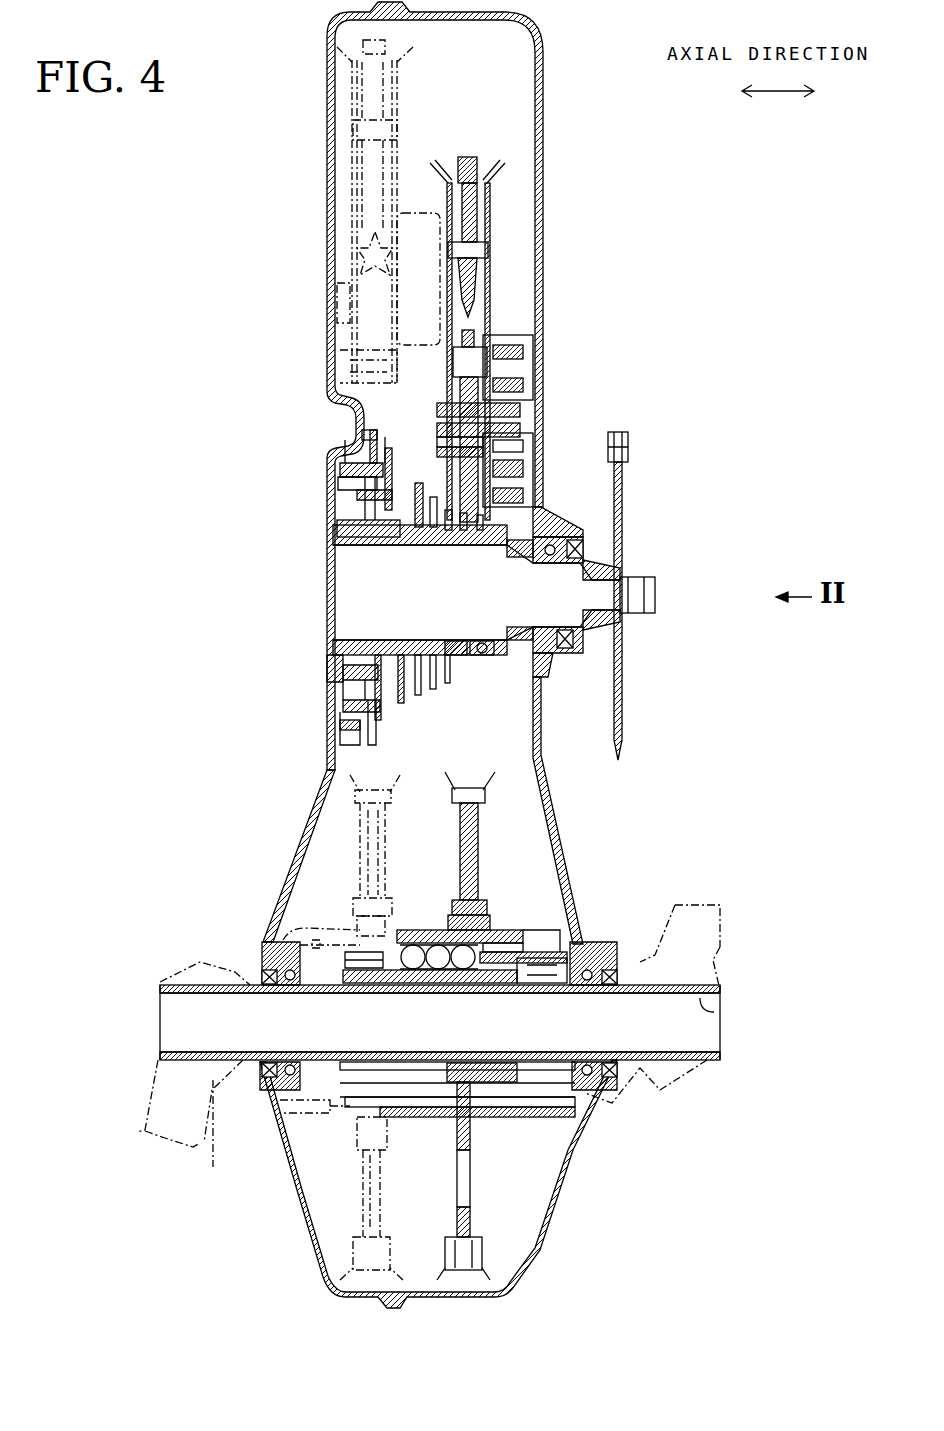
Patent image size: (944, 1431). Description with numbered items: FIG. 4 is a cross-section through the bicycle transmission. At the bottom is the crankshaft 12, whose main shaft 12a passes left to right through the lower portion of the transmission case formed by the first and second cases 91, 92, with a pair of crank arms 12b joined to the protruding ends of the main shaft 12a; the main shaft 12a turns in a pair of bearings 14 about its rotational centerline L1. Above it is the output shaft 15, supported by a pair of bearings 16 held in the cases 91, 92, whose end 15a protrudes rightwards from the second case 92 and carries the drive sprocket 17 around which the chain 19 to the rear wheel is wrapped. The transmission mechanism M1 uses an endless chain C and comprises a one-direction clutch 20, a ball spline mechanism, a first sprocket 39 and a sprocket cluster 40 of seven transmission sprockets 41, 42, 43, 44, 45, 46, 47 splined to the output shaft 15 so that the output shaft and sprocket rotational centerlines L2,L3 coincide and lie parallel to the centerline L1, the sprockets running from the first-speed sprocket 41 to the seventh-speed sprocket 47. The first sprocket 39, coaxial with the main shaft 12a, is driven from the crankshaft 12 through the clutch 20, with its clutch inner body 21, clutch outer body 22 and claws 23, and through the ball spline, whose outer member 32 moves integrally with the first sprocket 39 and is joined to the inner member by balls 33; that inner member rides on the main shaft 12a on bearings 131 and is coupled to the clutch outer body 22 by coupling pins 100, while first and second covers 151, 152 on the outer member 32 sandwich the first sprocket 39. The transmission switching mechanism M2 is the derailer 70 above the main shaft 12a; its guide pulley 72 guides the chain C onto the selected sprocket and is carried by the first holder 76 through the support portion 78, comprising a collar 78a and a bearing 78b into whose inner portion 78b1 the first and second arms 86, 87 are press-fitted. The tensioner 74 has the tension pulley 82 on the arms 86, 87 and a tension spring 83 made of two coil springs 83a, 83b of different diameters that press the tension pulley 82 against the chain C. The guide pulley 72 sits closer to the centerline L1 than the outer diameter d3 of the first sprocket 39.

The crankshaft 12 is at (210, 950).
The main shaft 12a is at (705, 1010).
The crank arms 12b is at (722, 947).
The bearings 14 is at (268, 937).
The output shaft 15 is at (385, 640).
The end of output shaft 15a is at (630, 563).
The bearings 16 is at (333, 662).
The drive sprocket 17 is at (623, 663).
The chain 19 is at (630, 443).
The one-direction clutch 20 is at (550, 924).
The clutch inner body 21 is at (557, 1100).
The clutch outer body 22 is at (563, 1103).
The claws 23 is at (600, 1073).
The outer member 32 is at (512, 907).
The balls 33 is at (417, 945).
The first sprocket 39 is at (372, 862).
The sprocket cluster 40 is at (401, 768).
The transmission sprocket 41 is at (342, 742).
The transmission sprocket 42 is at (400, 708).
The transmission sprocket 43 is at (405, 715).
The transmission sprocket 44 is at (420, 698).
The transmission sprocket 45 is at (432, 677).
The transmission sprocket 46 is at (457, 640).
The transmission sprocket 47 is at (482, 633).
The derailer 70 is at (420, 367).
The guide pulley 72 is at (522, 350).
The tensioner 74 is at (513, 185).
The first holder 76 is at (433, 402).
The support portion 78 is at (410, 483).
The collar 78a is at (525, 432).
The bearing 78b is at (505, 390).
The inner portion of bearing 78b1 is at (525, 415).
The tension pulley 82 is at (473, 213).
The tension spring 83 is at (752, 440).
The spring 83a is at (540, 489).
The spring 83b is at (540, 466).
The first arm 86 is at (442, 343).
The second arm 87 is at (458, 363).
The first case 91 is at (297, 1223).
The second case 92 is at (560, 1210).
The coupling pins 100 is at (480, 1103).
The bearings 131 is at (470, 1075).
The first cover 151 is at (375, 907).
The second cover 152 is at (497, 938).
The chain C is at (460, 1270).
The transmission mechanism M1 is at (508, 752).
The transmission switching mechanism M2 is at (520, 258).
The rotational centerline of crankshaft L1 is at (272, 1022).
The rotational centerlines of output shaft and transmission sprockets L2,L3 is at (335, 597).
The outer diameter of first sprocket d3 is at (560, 1270).